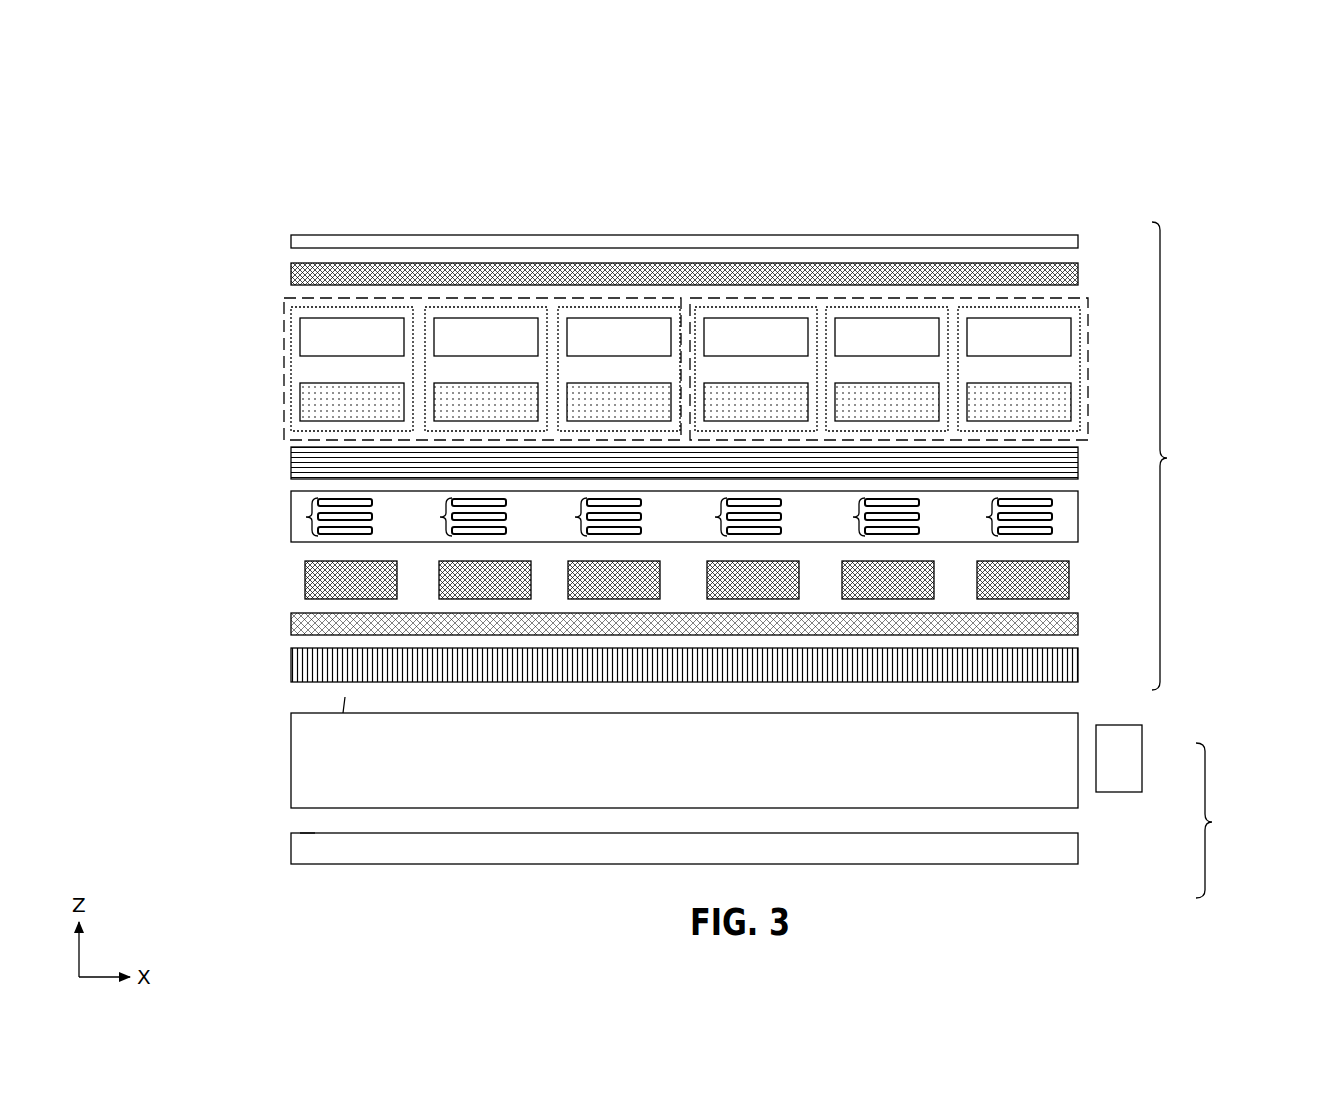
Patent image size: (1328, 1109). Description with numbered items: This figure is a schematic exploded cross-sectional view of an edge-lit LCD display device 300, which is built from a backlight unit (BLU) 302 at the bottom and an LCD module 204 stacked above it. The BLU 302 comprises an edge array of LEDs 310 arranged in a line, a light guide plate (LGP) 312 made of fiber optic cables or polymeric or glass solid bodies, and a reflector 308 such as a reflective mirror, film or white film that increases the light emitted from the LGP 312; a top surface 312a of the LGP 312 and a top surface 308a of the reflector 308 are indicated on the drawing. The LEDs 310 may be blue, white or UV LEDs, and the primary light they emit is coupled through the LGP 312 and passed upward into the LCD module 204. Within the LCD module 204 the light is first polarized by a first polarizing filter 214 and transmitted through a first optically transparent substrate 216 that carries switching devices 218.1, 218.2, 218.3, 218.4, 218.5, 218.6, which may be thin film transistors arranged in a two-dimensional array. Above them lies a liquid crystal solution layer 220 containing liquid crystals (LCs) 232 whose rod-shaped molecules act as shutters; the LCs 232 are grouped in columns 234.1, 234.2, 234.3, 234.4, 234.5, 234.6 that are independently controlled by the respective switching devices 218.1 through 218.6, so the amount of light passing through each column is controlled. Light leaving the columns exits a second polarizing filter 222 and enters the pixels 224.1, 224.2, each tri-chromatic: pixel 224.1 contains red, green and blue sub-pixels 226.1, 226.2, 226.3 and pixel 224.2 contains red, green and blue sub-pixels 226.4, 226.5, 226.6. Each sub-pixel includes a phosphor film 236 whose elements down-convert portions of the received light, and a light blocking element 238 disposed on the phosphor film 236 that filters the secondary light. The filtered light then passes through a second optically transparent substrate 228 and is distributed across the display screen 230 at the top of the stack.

The edge-lit LCD display device 300 is at (1200, 166).
The LCD module 204 is at (1194, 456).
The display screen 230 is at (1058, 244).
The second optically transparent substrate 228 is at (1058, 272).
The pixel 224.1 is at (284, 345).
The pixel 224.2 is at (1088, 345).
The red sub-pixel 226.1 is at (348, 306).
The green sub-pixel 226.2 is at (484, 306).
The blue sub-pixel 226.3 is at (616, 306).
The red sub-pixel 226.4 is at (754, 306).
The green sub-pixel 226.5 is at (886, 306).
The blue sub-pixel 226.6 is at (1018, 306).
The light blocking element 238 is at (685, 337).
The phosphor film 236 is at (685, 402).
The second polarizing filter 222 is at (1058, 456).
The liquid crystal solution layer 220 is at (1080, 514).
The liquid crystals 232 is at (337, 533).
The column 234.1 is at (285, 517).
The column 234.2 is at (445, 517).
The column 234.3 is at (580, 517).
The column 234.4 is at (720, 517).
The column 234.5 is at (858, 517).
The column 234.6 is at (991, 517).
The switching device 218.1 is at (351, 580).
The switching device 218.2 is at (485, 580).
The switching device 218.3 is at (614, 580).
The switching device 218.4 is at (753, 580).
The switching device 218.5 is at (888, 580).
The switching device 218.6 is at (1023, 580).
The first optically transparent substrate 216 is at (1058, 622).
The first polarizing filter 214 is at (1058, 660).
The backlight unit 302 is at (1230, 820).
The light guide plate 312 is at (1054, 782).
The top surface of support plate 312a is at (345, 697).
The LEDs 310 is at (1138, 738).
The reflector 308 is at (1054, 847).
The top surface of base plate 308a is at (315, 832).